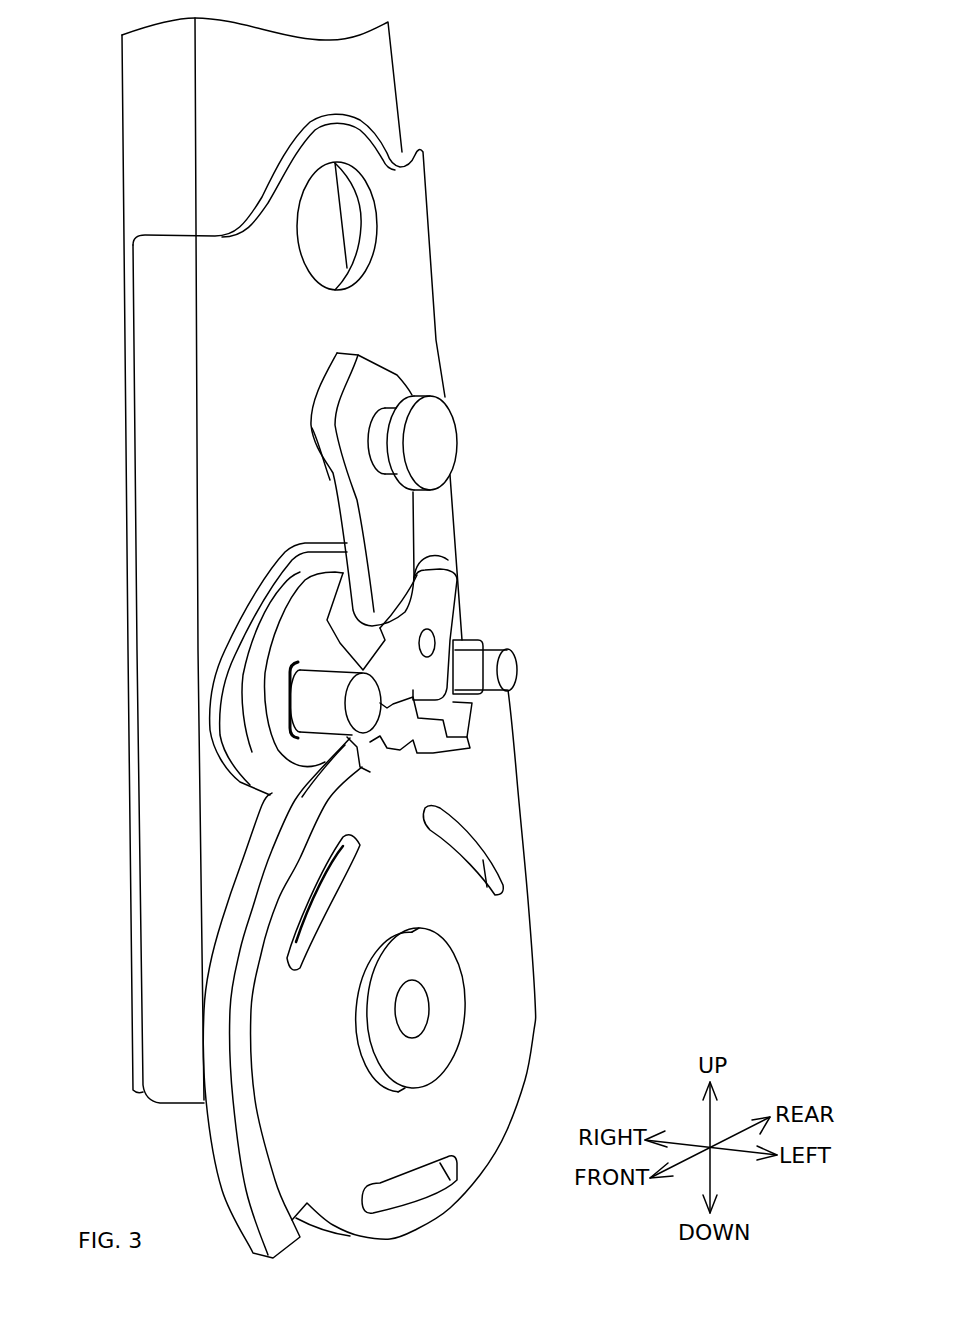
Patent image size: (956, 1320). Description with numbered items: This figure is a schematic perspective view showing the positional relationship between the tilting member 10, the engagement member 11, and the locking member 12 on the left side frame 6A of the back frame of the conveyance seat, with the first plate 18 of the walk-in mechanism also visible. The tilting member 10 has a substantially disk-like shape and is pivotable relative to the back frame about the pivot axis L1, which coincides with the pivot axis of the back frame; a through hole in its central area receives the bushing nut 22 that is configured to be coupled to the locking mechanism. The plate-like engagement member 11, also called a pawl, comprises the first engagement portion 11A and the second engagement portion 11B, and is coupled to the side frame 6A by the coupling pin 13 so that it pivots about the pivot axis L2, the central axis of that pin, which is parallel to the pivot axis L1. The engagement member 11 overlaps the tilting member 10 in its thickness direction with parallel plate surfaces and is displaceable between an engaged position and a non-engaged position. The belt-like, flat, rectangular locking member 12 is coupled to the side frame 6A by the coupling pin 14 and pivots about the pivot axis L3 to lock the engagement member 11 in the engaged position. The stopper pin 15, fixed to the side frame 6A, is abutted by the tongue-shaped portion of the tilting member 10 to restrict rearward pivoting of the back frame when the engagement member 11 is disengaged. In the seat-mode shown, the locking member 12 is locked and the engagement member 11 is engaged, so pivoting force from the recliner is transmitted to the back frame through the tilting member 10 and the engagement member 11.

The left side frame 6A is at (142, 130).
The first plate 18 is at (425, 318).
The tilting member 10 is at (500, 823).
The bushing nut 22 is at (437, 973).
The pivot axis L1 is at (410, 1010).
The engagement member 11 is at (223, 623).
The first engagement portion 11A is at (440, 612).
The second engagement portion 11B is at (430, 558).
The locking member 12 is at (395, 513).
The coupling pin 14 is at (435, 430).
The pivot axis L3 is at (430, 443).
The stopper pin 15 is at (512, 672).
The coupling pin 13 is at (357, 718).
The pivot axis L2 is at (362, 705).